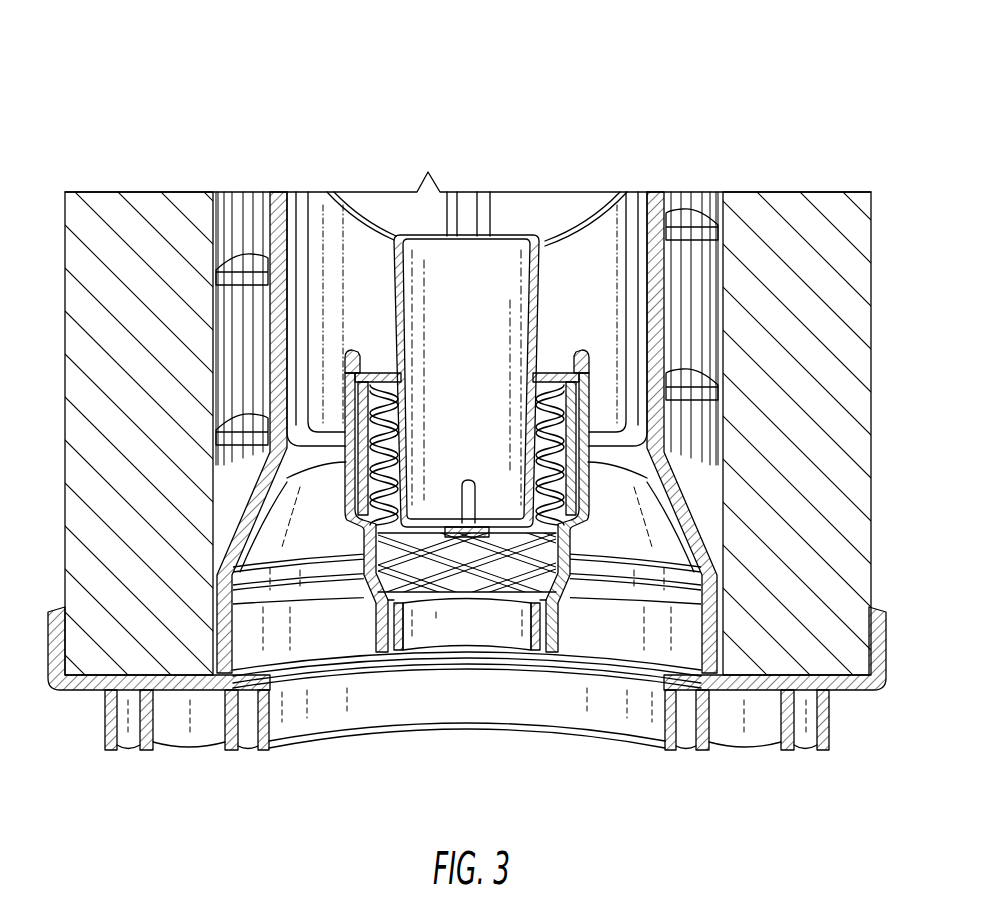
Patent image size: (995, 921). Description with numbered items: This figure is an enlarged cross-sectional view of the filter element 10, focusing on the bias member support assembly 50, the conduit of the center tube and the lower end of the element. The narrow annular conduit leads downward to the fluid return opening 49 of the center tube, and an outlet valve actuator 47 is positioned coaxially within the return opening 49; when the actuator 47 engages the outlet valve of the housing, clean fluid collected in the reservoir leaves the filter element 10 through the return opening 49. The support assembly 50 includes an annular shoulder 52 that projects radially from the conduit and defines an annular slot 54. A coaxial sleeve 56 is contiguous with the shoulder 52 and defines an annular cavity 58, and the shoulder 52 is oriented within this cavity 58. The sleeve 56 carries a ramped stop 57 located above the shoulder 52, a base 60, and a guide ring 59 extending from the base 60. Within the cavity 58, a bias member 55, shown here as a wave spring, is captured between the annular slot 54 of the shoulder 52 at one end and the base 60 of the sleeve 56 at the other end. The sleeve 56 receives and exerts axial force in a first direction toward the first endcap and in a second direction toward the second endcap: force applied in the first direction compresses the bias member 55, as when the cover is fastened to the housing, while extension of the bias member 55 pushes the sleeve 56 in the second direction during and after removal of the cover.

The filter element 10 is at (212, 90).
The outlet valve actuator 47 is at (470, 492).
The fluid return opening 49 is at (567, 541).
The support assembly 50 is at (340, 492).
The annular shoulder 52 is at (364, 370).
The annular slot 54 is at (555, 400).
The bias member 55 is at (374, 582).
The sleeve 56 is at (590, 474).
The ramped stop 57 is at (586, 358).
The annular cavity 58 is at (385, 467).
The guide ring 59 is at (557, 653).
The base 60 is at (562, 598).